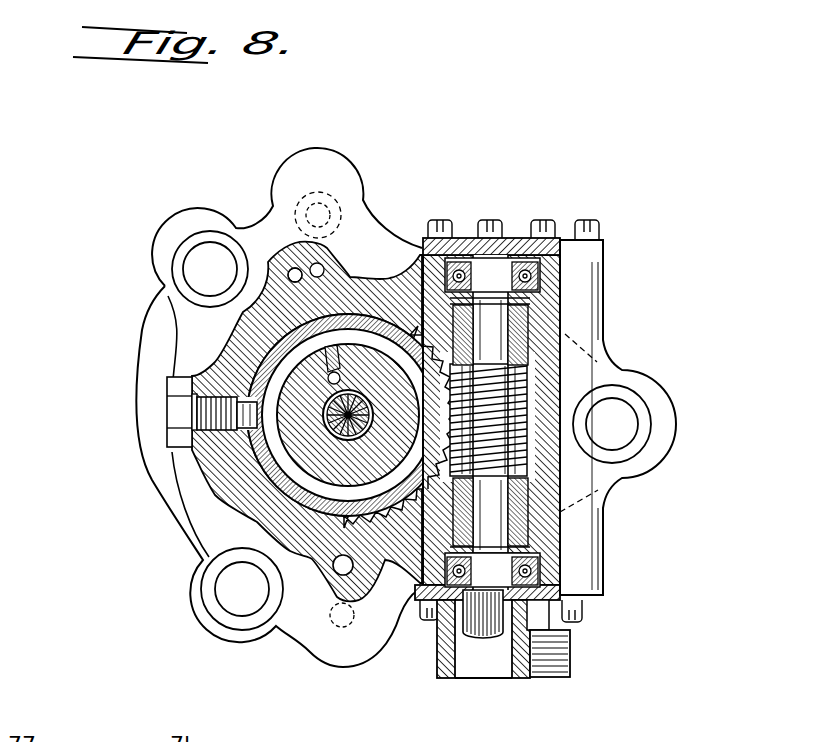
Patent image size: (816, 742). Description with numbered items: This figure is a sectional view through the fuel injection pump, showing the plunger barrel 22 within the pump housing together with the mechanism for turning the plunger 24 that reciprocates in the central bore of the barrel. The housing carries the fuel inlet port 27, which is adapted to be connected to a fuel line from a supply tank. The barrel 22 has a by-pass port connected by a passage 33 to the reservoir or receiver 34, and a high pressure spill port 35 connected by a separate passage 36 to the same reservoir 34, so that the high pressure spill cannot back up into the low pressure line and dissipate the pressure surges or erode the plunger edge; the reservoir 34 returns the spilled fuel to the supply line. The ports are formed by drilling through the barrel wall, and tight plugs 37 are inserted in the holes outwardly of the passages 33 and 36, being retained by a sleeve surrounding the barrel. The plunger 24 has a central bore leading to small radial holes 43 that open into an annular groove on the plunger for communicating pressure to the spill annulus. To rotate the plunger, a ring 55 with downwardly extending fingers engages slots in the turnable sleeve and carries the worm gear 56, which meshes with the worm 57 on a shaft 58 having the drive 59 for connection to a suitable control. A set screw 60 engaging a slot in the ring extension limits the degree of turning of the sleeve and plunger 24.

The plunger barrel 22 is at (300, 470).
The plunger 24 is at (345, 418).
The fuel inlet port 27 is at (335, 624).
The passage 33 is at (335, 248).
The reservoir or receiver 34 is at (336, 198).
The high pressure spill port 35 is at (328, 385).
The passage 36 is at (298, 243).
The plug 37 is at (328, 362).
The radial holes 43 is at (335, 447).
The ring 55 is at (300, 348).
The worm gear 56 is at (383, 307).
The worm 57 is at (526, 386).
The shaft 58 is at (482, 553).
The drive 59 is at (483, 634).
The set screw 60 is at (178, 415).